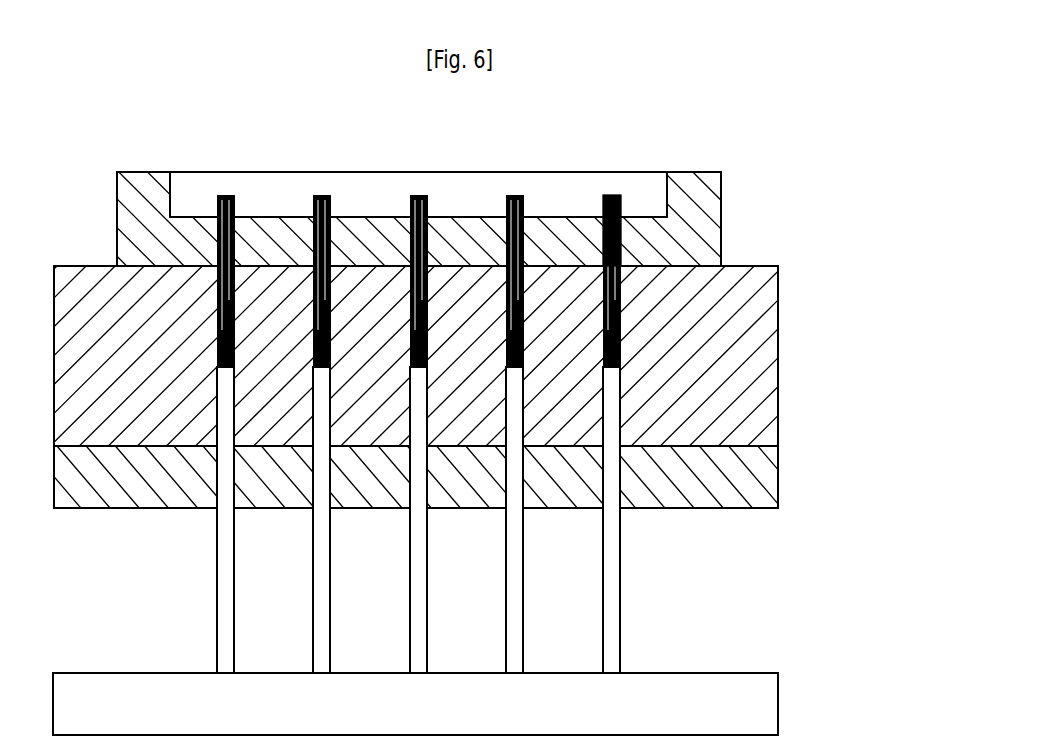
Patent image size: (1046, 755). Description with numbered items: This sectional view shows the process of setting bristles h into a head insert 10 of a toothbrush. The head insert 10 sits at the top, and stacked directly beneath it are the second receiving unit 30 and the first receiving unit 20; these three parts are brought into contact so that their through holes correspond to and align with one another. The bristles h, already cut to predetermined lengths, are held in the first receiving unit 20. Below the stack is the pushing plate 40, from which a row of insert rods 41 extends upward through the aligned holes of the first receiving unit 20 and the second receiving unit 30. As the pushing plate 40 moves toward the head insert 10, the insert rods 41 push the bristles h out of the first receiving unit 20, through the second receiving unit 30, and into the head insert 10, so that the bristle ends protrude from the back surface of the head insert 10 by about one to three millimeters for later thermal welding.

The head insert 10 is at (717, 218).
The first receiving unit 20 is at (750, 475).
The second receiving unit 30 is at (748, 360).
The pushing plate 40 is at (750, 713).
The insert rod 41 is at (613, 628).
The bristle h is at (612, 197).